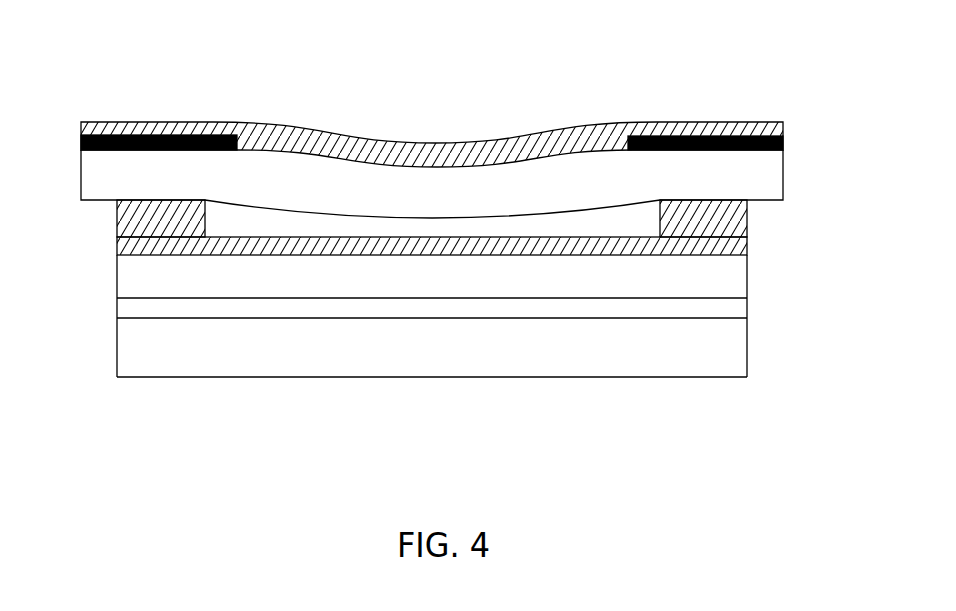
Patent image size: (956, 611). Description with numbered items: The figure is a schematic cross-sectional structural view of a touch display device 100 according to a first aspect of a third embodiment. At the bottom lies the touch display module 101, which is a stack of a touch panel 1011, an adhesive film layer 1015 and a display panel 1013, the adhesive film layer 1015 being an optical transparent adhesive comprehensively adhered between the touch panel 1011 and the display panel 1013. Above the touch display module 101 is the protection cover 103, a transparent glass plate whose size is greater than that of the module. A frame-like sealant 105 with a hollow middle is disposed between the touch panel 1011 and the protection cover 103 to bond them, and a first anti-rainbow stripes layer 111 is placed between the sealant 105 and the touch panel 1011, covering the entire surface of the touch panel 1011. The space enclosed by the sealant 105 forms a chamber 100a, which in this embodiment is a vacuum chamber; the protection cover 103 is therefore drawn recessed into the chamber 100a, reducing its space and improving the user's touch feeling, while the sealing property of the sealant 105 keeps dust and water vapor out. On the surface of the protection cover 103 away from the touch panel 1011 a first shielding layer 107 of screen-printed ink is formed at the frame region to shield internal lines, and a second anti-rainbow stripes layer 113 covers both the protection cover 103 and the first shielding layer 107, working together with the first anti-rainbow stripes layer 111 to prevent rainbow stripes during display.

The touch display device 100 is at (153, 90).
The chamber 100a is at (380, 230).
The touch display module 101 is at (435, 341).
The touch panel 1011 is at (734, 265).
The adhesive film layer 1015 is at (742, 307).
The display panel 1013 is at (735, 369).
The protection cover 103 is at (770, 170).
The sealant 105 is at (735, 221).
The first shielding layer 107 is at (783, 141).
The first anti-rainbow stripes layer 111 is at (735, 245).
The second anti-rainbow stripes layer 113 is at (772, 118).